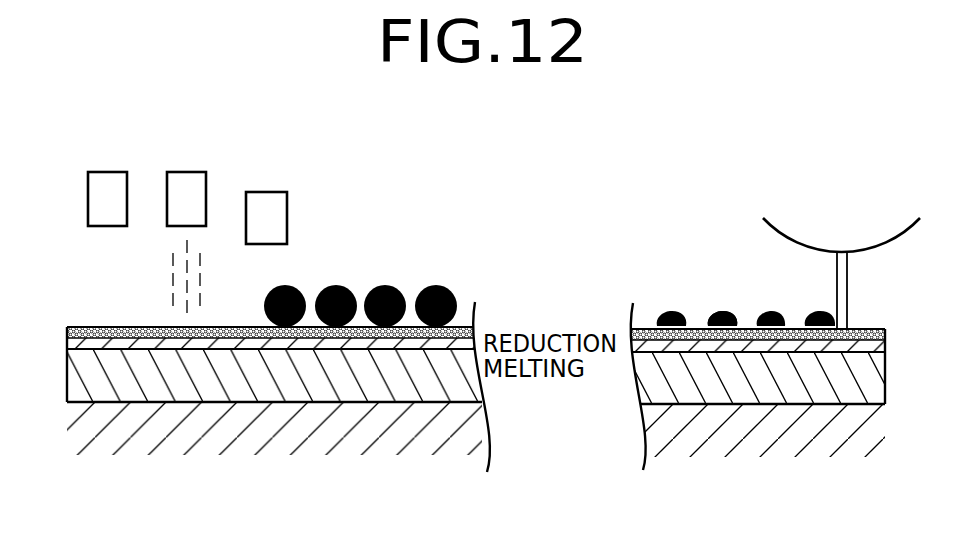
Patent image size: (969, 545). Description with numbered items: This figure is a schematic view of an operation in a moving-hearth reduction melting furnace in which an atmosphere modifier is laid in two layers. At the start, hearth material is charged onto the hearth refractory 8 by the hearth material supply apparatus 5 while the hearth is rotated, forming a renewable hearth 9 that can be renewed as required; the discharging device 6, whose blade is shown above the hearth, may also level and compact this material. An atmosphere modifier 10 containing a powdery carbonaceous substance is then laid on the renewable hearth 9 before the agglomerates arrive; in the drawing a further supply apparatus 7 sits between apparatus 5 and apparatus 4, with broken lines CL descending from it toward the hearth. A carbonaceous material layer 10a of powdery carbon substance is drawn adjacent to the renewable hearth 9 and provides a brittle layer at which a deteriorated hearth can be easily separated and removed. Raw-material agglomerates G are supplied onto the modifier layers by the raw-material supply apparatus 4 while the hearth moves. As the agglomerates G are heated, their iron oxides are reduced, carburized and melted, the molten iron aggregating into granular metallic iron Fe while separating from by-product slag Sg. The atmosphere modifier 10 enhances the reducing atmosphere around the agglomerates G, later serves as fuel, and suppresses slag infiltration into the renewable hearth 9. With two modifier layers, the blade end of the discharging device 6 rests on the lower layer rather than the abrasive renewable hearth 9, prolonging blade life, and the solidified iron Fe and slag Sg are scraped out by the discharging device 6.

The raw-material supply apparatus 4 is at (272, 192).
The hearth material supply apparatus 5 is at (110, 172).
The discharging device 6 is at (852, 219).
The mixture supply device 7 is at (190, 172).
The hearth refractory 8 is at (90, 428).
The renewable hearth 9 is at (90, 390).
The atmosphere modifier 10 is at (108, 327).
The carbonaceous material layer 10a is at (67, 343).
The raw-material agglomerates G is at (336, 288).
The carbonaceous material feed CL is at (205, 276).
The granular metallic iron Fe is at (710, 313).
The by-product slag Sg is at (722, 312).